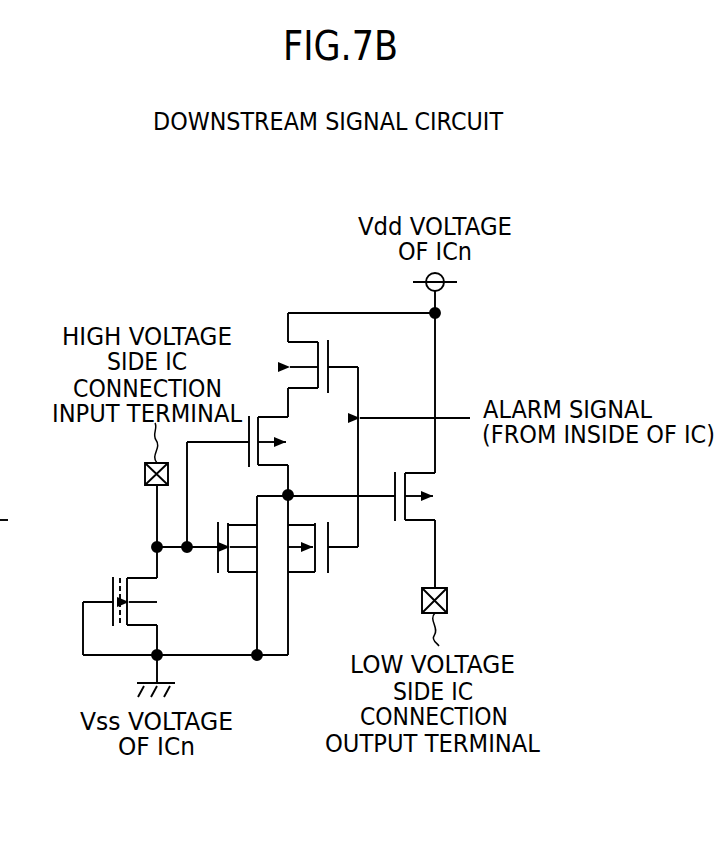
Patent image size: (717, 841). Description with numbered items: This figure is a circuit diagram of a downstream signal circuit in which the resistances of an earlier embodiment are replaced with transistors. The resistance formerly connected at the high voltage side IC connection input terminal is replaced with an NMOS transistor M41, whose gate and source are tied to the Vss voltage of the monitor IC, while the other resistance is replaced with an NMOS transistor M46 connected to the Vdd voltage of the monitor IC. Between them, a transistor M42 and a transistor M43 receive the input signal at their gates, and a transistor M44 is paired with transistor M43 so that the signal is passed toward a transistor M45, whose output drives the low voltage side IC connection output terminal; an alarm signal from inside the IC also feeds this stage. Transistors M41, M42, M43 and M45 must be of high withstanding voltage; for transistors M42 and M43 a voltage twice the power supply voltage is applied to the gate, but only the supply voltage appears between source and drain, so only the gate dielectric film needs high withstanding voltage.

The NMOS transistor M41 is at (145, 616).
The transistor M42 is at (264, 481).
The transistor M43 is at (229, 535).
The transistor M44 is at (323, 563).
The transistor M45 is at (411, 482).
The NMOS transistor M46 is at (298, 443).